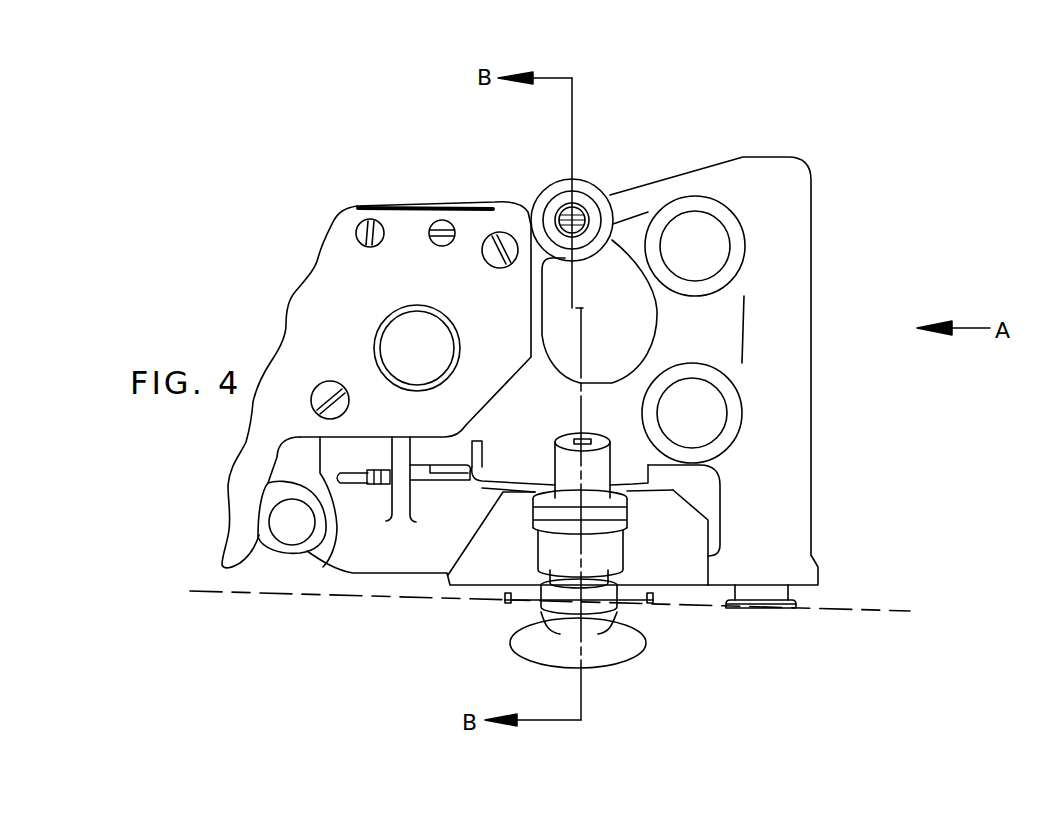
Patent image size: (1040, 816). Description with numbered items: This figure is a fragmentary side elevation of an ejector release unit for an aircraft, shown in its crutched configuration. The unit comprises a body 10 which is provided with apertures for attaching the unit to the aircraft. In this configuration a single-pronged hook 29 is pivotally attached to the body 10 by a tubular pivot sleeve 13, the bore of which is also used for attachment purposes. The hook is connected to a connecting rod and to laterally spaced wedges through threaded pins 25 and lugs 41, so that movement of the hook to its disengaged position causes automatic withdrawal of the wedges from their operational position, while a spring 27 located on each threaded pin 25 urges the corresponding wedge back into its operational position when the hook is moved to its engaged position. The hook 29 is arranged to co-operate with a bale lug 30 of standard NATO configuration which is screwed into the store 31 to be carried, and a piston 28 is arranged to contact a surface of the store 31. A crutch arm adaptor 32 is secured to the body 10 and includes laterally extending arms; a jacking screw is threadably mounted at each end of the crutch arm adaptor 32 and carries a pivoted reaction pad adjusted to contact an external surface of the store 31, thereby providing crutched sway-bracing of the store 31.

The body 10 is at (632, 203).
The pivot sleeve 13 is at (403, 313).
The threaded pin 25 is at (445, 475).
The spring 27 is at (453, 480).
The piston 28 is at (762, 645).
The hook 29 is at (362, 562).
The bale lug 30 is at (630, 602).
The store 31 is at (863, 610).
The crutch arm adaptor 32 is at (690, 518).
The lug 41 is at (400, 502).